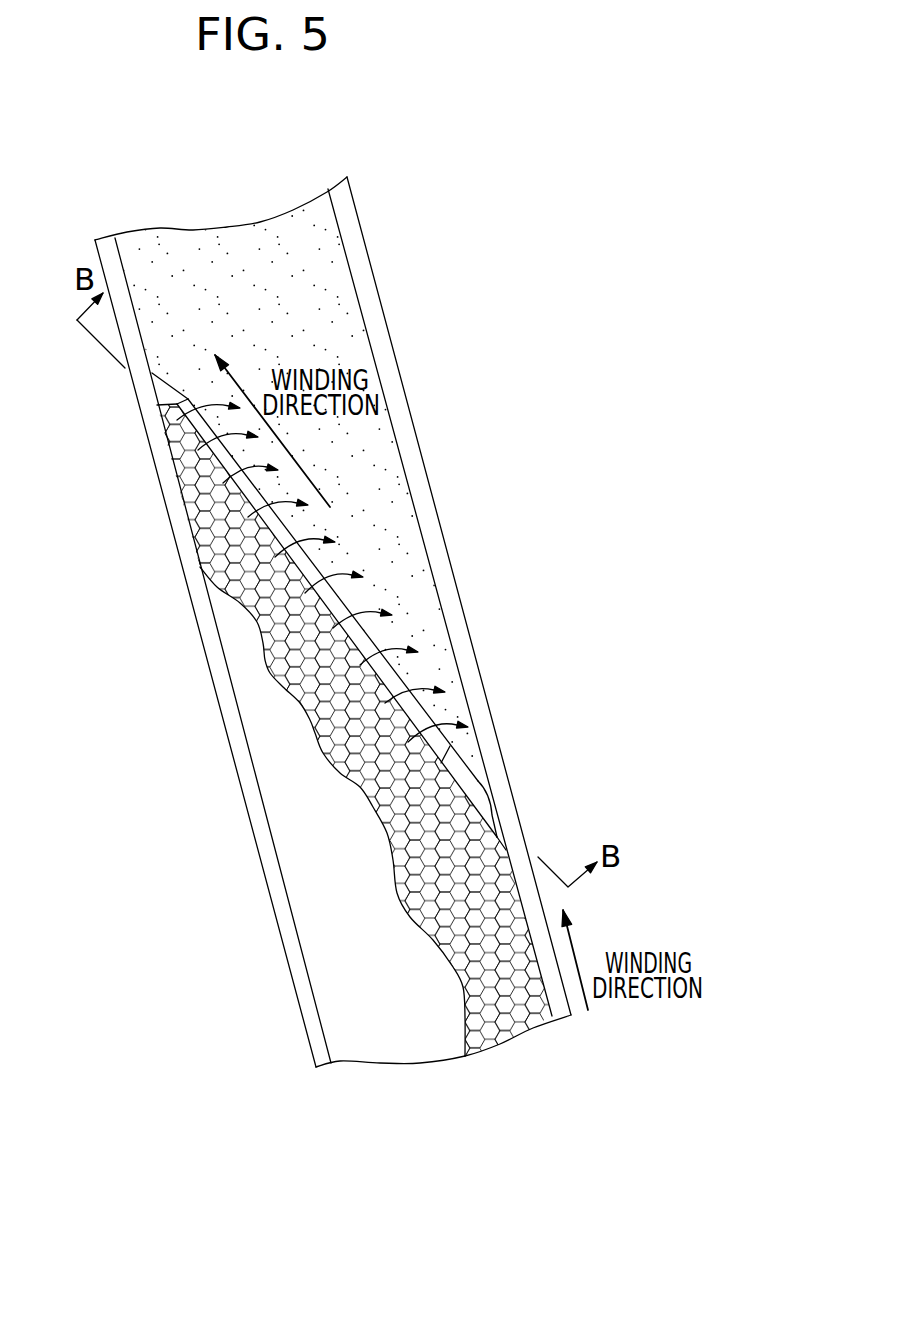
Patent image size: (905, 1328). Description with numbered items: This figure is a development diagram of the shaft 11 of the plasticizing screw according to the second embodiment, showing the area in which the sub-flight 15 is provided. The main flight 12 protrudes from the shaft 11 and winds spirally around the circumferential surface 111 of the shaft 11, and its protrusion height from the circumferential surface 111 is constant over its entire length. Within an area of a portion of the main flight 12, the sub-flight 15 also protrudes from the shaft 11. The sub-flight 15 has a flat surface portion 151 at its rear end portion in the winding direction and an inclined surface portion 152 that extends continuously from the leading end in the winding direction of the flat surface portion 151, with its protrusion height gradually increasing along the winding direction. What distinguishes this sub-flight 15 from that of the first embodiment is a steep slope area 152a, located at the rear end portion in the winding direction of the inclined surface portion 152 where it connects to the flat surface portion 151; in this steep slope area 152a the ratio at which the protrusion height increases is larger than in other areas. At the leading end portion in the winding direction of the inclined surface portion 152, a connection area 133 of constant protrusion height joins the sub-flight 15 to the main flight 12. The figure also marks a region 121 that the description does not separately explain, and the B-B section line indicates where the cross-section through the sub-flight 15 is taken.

The shaft 11 is at (370, 1115).
The main flight 12 is at (353, 238).
The exposed portion of separator 121 is at (347, 913).
The circumferential surface 111 is at (397, 1028).
The connection area 133 is at (166, 391).
The sub-flight 15 is at (300, 530).
The inclined surface portion 152 is at (378, 583).
The steep slope area 152a is at (445, 752).
The flat surface portion 151 is at (467, 778).